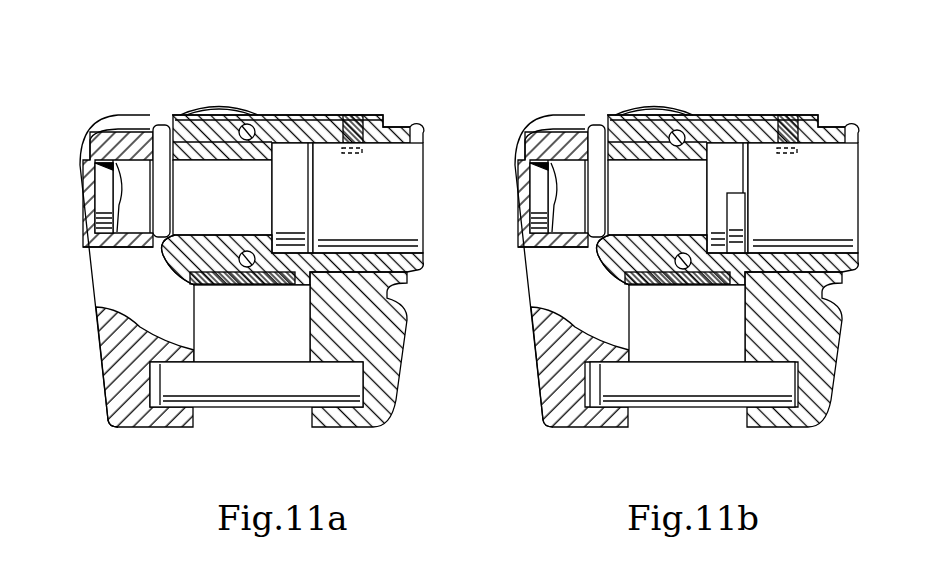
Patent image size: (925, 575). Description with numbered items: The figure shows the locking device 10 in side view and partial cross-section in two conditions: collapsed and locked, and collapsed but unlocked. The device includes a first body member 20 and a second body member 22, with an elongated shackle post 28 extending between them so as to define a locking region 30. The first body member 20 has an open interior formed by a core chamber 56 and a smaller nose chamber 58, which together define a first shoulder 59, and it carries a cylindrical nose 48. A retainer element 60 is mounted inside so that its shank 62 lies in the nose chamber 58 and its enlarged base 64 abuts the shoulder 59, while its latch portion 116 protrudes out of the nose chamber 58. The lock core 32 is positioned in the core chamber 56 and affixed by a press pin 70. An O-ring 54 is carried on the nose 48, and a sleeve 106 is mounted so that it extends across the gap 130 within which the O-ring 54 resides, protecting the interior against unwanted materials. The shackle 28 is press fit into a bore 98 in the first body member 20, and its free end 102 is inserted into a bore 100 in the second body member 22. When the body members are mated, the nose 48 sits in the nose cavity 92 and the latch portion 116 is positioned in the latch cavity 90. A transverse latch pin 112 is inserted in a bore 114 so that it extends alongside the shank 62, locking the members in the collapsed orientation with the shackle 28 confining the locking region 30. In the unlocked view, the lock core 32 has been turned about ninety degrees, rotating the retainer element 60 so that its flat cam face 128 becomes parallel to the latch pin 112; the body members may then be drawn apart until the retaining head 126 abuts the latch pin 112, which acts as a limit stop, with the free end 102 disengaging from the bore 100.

In FIG. 11A, the locking device 10 is at (418, 85).
In FIG. 11B, the locking device 10 is at (680, 232).
In FIG. 11A, the first body member 20 is at (400, 290).
In FIG. 11B, the first body member 20 is at (811, 349).
In FIG. 11A, the second body member 22 is at (113, 355).
In FIG. 11B, the second body member 22 is at (542, 367).
In FIG. 11A, the shackle post 28 is at (237, 391).
In FIG. 11B, the shackle post 28 is at (692, 384).
In FIG. 11A, the locking region 30 is at (238, 346).
In FIG. 11B, the locking region 30 is at (687, 323).
In FIG. 11A, the lock core 32 is at (354, 201).
In FIG. 11B, the lock core 32 is at (803, 198).
In FIG. 11A, the cylindrical nose 48 is at (173, 282).
In FIG. 11B, the cylindrical nose 48 is at (573, 265).
In FIG. 11A, the O-ring 54 is at (245, 268).
In FIG. 11A, the core chamber 56 is at (396, 152).
In FIG. 11A, the nose chamber 58 is at (200, 113).
In FIG. 11A, the first shoulder 59 is at (277, 233).
In FIG. 11A, the retainer element 60 is at (212, 201).
In FIG. 11B, the retainer element 60 is at (657, 197).
In FIG. 11A, the shank 62 is at (298, 114).
In FIG. 11A, the enlarged base 64 is at (330, 114).
In FIG. 11A, the press pin 70 is at (362, 114).
In FIG. 11B, the press pin 70 is at (827, 112).
In FIG. 11A, the latch cavity 90 is at (83, 158).
In FIG. 11A, the nose cavity 92 is at (213, 112).
In FIG. 11A, the bore 98 is at (308, 410).
In FIG. 11A, the bore 100 is at (138, 396).
In FIG. 11A, the free end 102 is at (173, 395).
In FIG. 11A, the sleeve 106 is at (249, 116).
In FIG. 11B, the sleeve 106 is at (705, 292).
In FIG. 11A, the latch pin 112 is at (163, 130).
In FIG. 11B, the latch pin 112 is at (658, 138).
In FIG. 11A, the bore 114 is at (90, 142).
In FIG. 11A, the latch portion 116 is at (106, 215).
In FIG. 11B, the latch portion 116 is at (501, 170).
In FIG. 11B, the retaining head 126 is at (510, 196).
In FIG. 11B, the flat cam face 128 is at (536, 153).
In FIG. 11A, the gap 130 is at (265, 115).
In FIG. 11B, the gap 130 is at (718, 105).